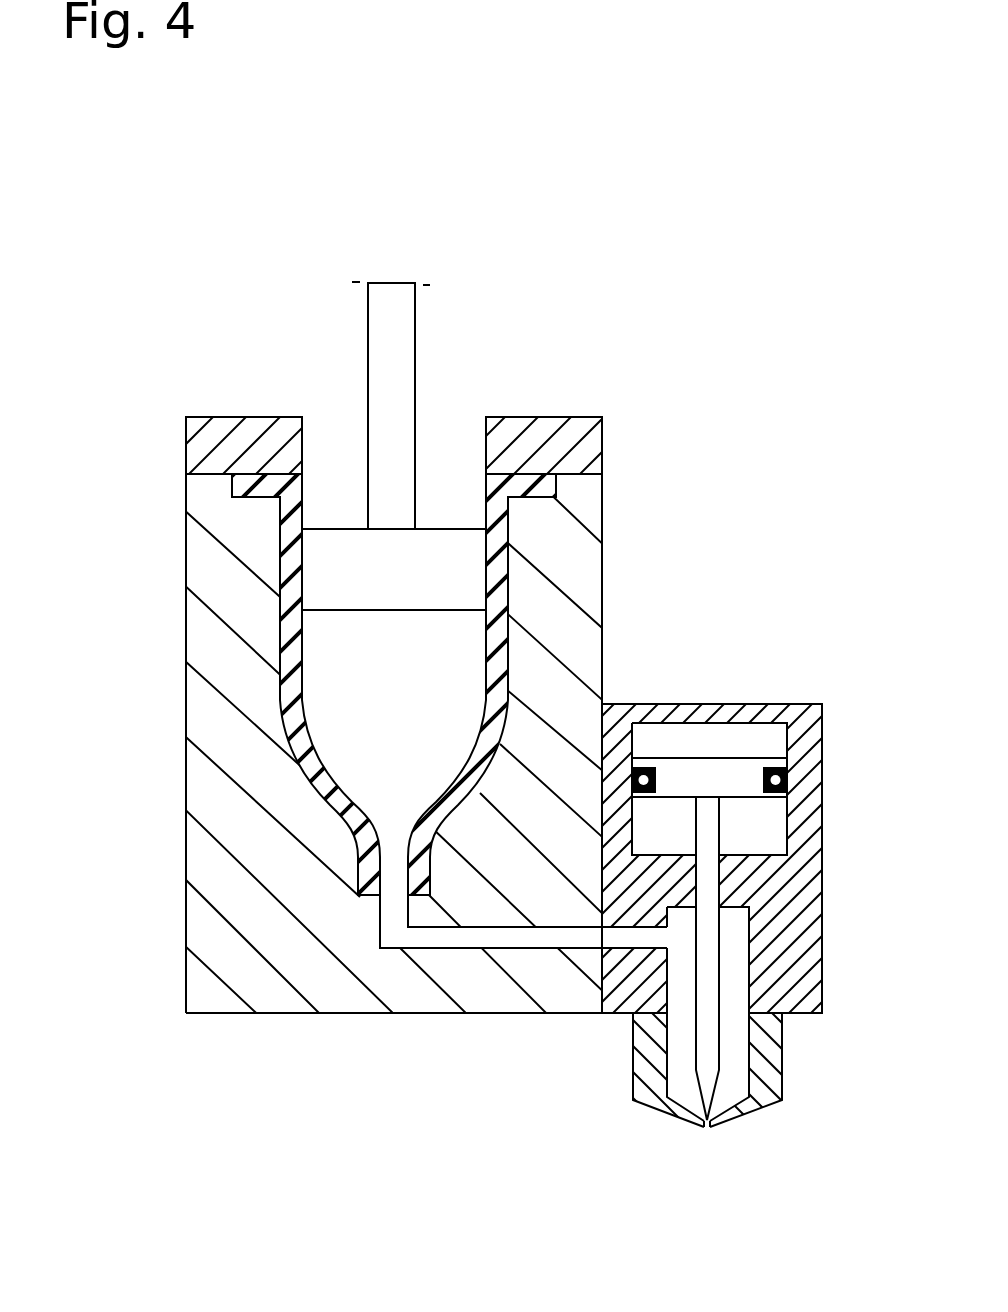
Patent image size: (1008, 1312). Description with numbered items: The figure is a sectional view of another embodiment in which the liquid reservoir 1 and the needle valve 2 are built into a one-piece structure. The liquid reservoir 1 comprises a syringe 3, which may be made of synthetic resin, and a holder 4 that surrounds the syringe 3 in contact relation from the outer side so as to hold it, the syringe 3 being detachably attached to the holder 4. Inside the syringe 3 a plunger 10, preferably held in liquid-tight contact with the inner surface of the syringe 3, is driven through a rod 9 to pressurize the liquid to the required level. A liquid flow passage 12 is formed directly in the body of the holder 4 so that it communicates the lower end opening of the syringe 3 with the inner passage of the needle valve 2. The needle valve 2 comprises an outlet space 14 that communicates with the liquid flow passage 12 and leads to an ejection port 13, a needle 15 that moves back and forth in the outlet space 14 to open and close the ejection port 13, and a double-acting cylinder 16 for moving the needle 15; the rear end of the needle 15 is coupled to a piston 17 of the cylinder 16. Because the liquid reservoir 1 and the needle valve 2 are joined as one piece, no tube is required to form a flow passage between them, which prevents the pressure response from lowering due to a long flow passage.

The liquid reservoir 1 is at (618, 527).
The needle valve 2 is at (782, 685).
The syringe 3 is at (292, 580).
The holder 4 is at (225, 750).
The rod 9 is at (382, 333).
The plunger 10 is at (445, 547).
The liquid flow passage 12 is at (463, 937).
The ejection port 13 is at (705, 1123).
The outlet space 14 is at (733, 977).
The needle 15 is at (708, 1045).
The double-acting cylinder 16 is at (838, 803).
The piston 17 is at (716, 775).